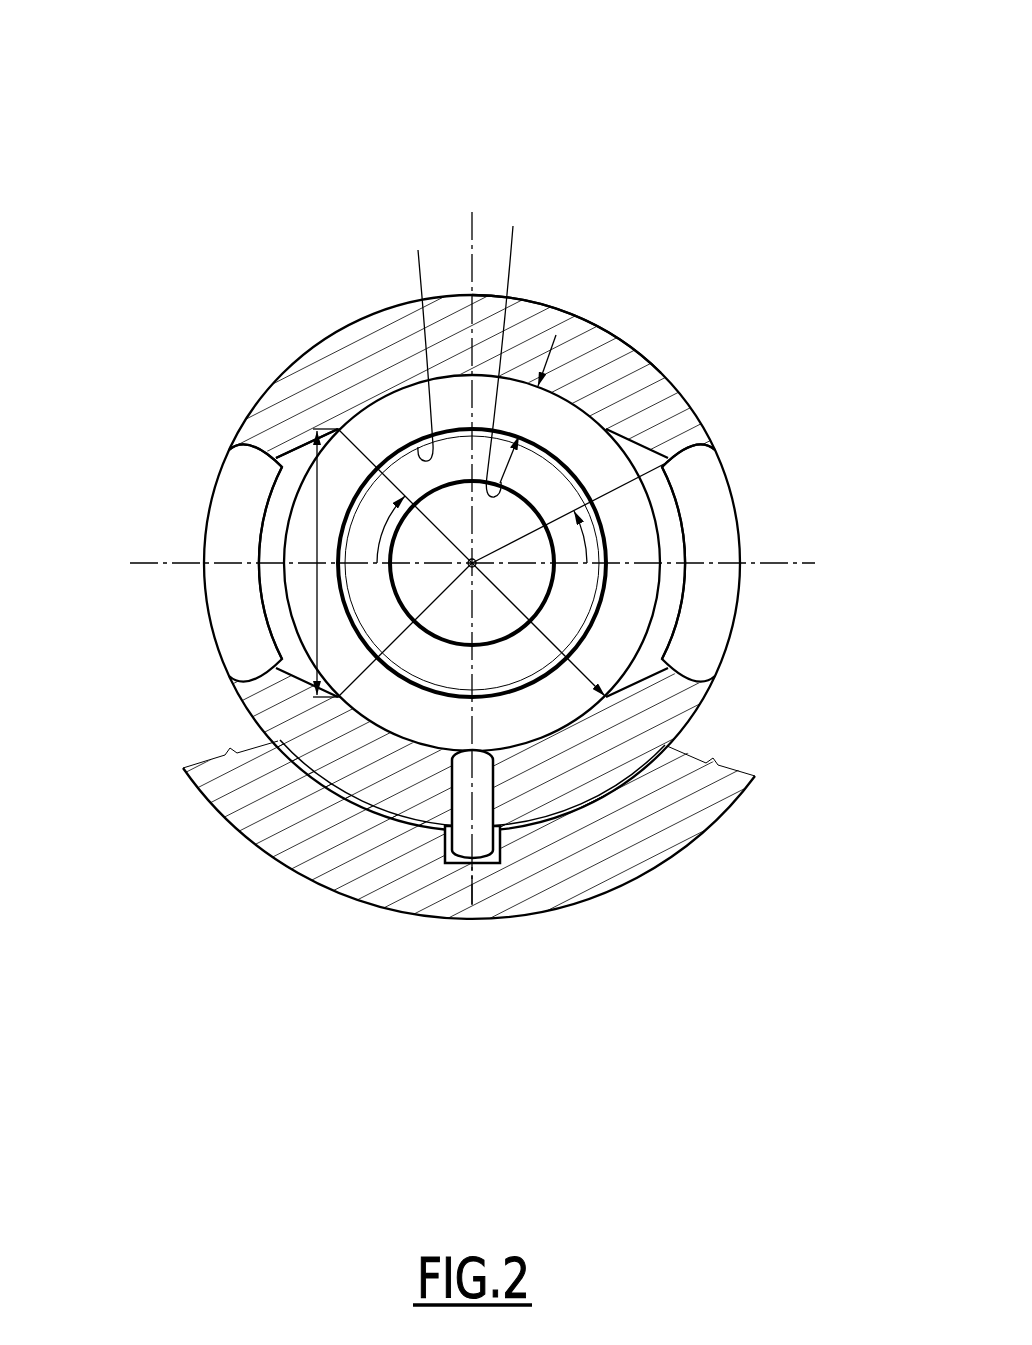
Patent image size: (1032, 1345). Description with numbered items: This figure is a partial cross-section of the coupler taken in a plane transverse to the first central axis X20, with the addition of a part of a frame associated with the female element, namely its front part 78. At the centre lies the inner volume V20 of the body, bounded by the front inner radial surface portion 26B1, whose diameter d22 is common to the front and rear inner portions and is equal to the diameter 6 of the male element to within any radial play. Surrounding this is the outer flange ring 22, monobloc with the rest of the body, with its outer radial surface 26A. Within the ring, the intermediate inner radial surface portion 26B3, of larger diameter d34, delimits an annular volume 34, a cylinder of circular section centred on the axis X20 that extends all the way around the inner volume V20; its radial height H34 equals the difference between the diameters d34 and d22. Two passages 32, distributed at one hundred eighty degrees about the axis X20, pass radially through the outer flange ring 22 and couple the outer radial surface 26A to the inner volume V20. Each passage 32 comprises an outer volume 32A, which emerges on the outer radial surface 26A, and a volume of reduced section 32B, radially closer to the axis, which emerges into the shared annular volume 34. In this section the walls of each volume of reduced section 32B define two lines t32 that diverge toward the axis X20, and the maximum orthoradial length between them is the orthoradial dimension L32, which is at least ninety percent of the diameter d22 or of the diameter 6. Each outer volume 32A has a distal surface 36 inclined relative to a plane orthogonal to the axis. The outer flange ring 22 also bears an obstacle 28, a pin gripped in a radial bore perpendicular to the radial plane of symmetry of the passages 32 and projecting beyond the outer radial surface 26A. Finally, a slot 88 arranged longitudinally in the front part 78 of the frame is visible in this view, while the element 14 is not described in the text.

The passage 32 is at (762, 473).
The distal surface 36 is at (242, 525).
The outer volume 32A is at (230, 583).
The volume of reduced section 32B is at (273, 584).
The lines t32 is at (299, 440).
The orthoradial dimension L32 is at (321, 563).
The outer radial surface 26A is at (670, 370).
The front inner radial surface portion 26B1 is at (517, 350).
The intermediate inner radial surface portion 26B3 is at (412, 344).
The outer flange ring 22 is at (493, 670).
The diameter d22 is at (543, 512).
The annular volume 34 is at (487, 721).
The diameter d34 is at (522, 612).
The height H34 is at (528, 409).
The first central axis X20 is at (470, 563).
The inner volume V20 is at (592, 767).
The front part 78 is at (405, 883).
The obstacle 28 is at (484, 816).
The slot 88 is at (457, 870).
The diameter 6 is at (423, 653).
The support 14 is at (462, 632).